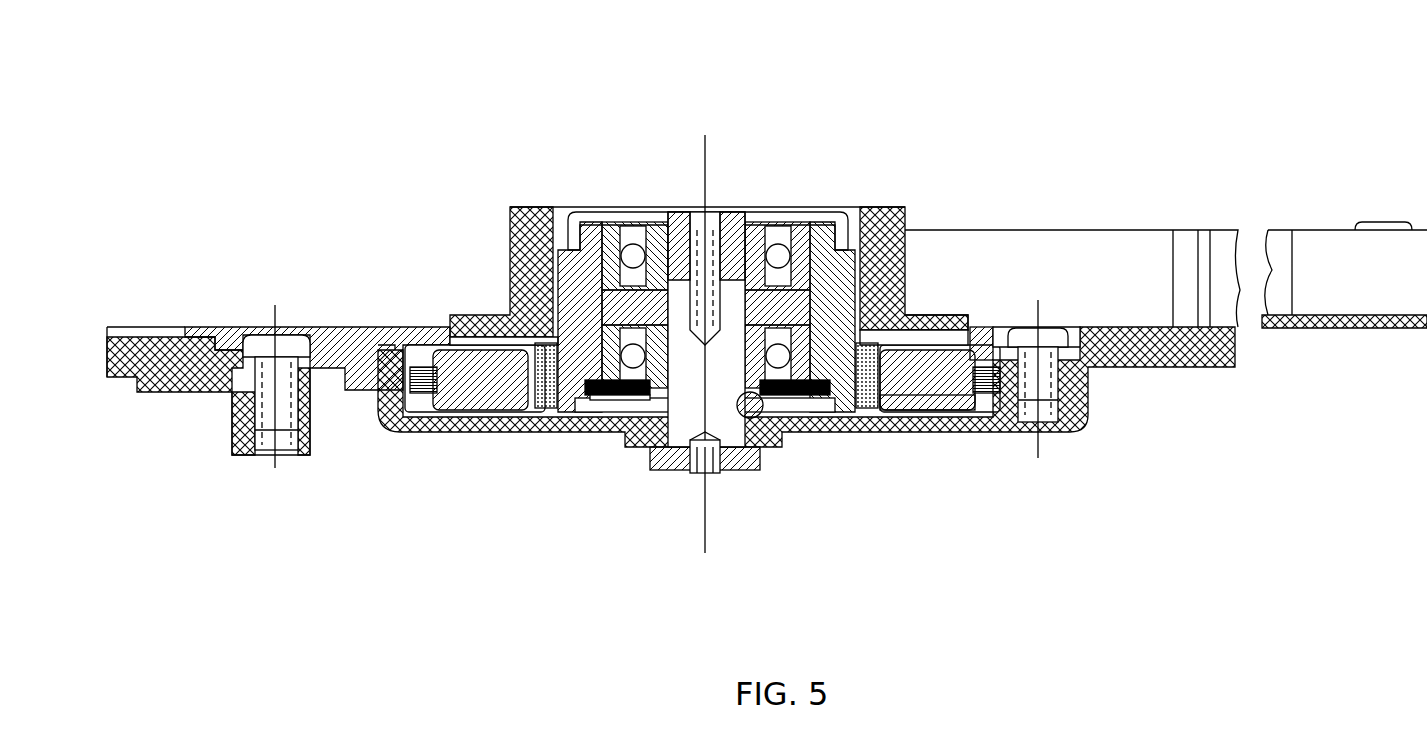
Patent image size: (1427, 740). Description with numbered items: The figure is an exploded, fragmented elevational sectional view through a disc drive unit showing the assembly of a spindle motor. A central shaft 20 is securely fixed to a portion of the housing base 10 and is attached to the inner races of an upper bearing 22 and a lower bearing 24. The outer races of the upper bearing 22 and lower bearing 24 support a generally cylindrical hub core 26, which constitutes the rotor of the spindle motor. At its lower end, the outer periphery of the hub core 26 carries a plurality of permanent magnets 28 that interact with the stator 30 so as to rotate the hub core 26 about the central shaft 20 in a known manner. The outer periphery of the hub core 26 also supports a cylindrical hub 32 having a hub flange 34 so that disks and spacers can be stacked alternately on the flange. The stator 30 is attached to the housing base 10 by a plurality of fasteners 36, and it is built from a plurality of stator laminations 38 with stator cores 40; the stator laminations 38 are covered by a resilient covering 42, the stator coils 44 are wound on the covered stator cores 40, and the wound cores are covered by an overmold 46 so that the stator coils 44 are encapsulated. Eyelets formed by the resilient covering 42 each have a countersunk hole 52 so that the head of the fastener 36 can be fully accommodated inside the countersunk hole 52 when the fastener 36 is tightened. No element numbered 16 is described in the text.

The housing base 10 is at (1112, 148).
The hub 16 is at (827, 437).
The central shaft 20 is at (730, 220).
The upper bearing 22 is at (772, 220).
The lower bearing 24 is at (803, 433).
The hub core 26 is at (837, 217).
The permanent magnets 28 is at (550, 433).
The stator 30 is at (987, 327).
The hub 32 is at (880, 215).
The hub flange 34 is at (932, 312).
The fasteners 36 is at (1048, 332).
The stator laminations 38 is at (1023, 430).
The stator cores 40 is at (893, 425).
The resilient covering 42 is at (1002, 330).
The stator coils 44 is at (953, 432).
The overmold 46 is at (910, 430).
The countersunk hole 52 is at (1100, 405).